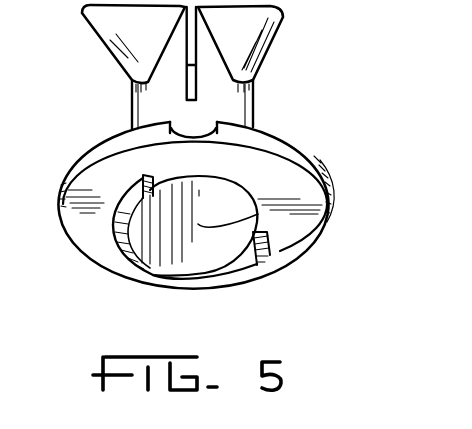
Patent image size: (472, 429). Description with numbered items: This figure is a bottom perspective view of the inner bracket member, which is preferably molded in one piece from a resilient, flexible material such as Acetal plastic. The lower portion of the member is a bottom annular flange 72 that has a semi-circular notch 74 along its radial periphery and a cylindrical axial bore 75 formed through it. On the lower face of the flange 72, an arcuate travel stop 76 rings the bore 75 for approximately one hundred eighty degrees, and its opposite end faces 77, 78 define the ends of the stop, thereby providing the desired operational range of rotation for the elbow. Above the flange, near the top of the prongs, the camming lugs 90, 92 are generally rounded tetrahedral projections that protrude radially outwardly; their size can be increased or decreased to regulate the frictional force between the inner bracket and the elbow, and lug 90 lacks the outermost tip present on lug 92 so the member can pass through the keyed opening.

The bottom annular flange 72 is at (300, 182).
The semi-circular notch 74 is at (197, 133).
The cylindrical axial bore 75 is at (323, 227).
The arcuate travel stop 76 is at (153, 273).
The end face 77 is at (263, 246).
The end face 78 is at (143, 186).
The camming lug 90 is at (273, 42).
The camming lug 92 is at (121, 42).